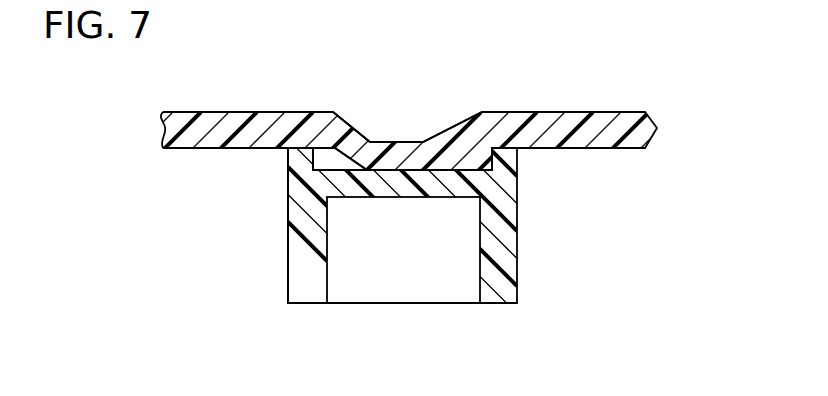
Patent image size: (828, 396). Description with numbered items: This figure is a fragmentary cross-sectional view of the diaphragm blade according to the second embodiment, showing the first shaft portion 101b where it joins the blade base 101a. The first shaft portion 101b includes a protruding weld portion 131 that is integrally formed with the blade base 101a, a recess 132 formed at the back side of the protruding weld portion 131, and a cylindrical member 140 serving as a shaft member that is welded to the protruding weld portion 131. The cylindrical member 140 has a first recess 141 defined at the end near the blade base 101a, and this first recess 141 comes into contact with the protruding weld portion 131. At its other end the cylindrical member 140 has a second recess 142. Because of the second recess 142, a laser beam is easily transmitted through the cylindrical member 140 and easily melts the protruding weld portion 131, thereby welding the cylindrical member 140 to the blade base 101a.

The blade base 101a is at (210, 112).
The first shaft portion 101b is at (279, 245).
The protruding weld portion 131 is at (402, 150).
The recess 132 is at (377, 128).
The cylindrical member 140 is at (310, 285).
The first recess 141 is at (470, 163).
The second recess 142 is at (462, 265).